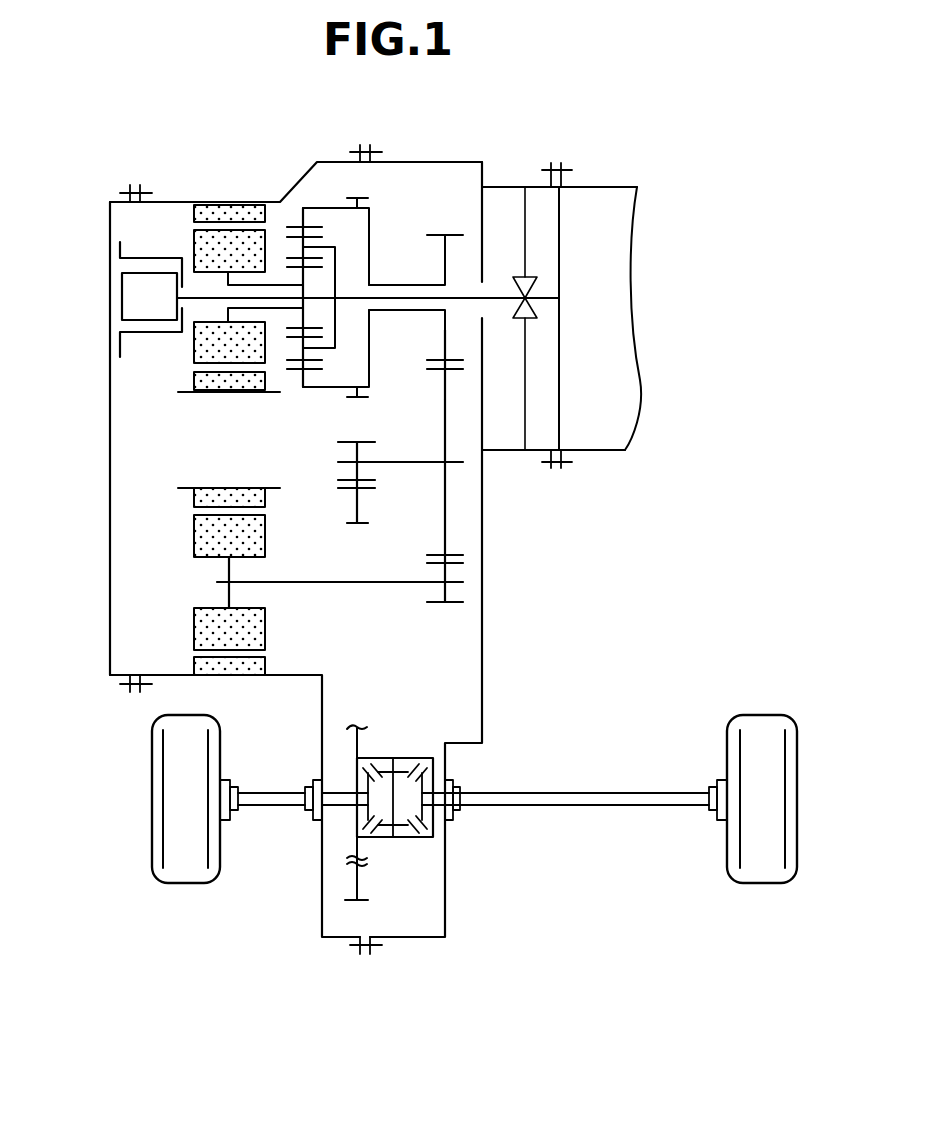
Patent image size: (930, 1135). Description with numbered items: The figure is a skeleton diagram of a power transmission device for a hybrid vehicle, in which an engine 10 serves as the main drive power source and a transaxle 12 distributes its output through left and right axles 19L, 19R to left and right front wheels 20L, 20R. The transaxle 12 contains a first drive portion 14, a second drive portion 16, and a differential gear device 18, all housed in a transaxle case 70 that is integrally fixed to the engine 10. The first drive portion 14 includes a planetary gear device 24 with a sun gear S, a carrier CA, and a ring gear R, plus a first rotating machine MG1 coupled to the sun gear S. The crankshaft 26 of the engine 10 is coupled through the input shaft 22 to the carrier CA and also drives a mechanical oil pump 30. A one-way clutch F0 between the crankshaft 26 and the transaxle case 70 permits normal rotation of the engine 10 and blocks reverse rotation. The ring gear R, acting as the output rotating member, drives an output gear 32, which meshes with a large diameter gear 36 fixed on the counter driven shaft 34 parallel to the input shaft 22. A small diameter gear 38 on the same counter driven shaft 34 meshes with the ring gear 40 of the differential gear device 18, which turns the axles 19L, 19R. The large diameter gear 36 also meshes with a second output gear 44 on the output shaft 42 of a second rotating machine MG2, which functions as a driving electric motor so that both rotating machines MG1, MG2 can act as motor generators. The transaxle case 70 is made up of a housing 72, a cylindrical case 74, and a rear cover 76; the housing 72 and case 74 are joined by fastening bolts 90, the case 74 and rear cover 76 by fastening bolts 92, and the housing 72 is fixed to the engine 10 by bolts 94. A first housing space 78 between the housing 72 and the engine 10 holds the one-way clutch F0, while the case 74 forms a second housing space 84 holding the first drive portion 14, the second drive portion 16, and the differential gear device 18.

The engine 10 is at (623, 390).
The transaxle 12 is at (535, 507).
The first drive portion 14 is at (390, 214).
The second drive portion 16 is at (383, 608).
The differential gear device 18 is at (465, 840).
The left axle 19L is at (270, 795).
The right axle 19R is at (597, 795).
The left front wheel 20L is at (187, 870).
The right front wheel 20R is at (763, 872).
The input shaft 22 is at (489, 302).
The planetary gear device 24 is at (308, 190).
The crankshaft 26 is at (550, 297).
The mechanical oil pump 30 is at (130, 300).
The output gear 32 is at (452, 360).
The counter driven shaft 34 is at (400, 465).
The large diameter gear 36 is at (437, 372).
The small diameter gear 38 is at (365, 447).
The ring gear of the differential gear device 40 is at (347, 494).
The output shaft 42 is at (308, 585).
The second output gear 44 is at (465, 577).
The transaxle case 70 is at (478, 151).
The housing 72 is at (437, 162).
The case 74 is at (178, 202).
The rear cover 76 is at (110, 563).
The first housing space 78 is at (485, 438).
The second housing space 84 is at (440, 650).
The fastening bolts 90 is at (378, 152).
The fastening bolts 92 is at (130, 193).
The bolts 94 is at (566, 169).
The first rotating machine MG1 is at (172, 364).
The second rotating machine MG2 is at (178, 534).
The carrier CA is at (325, 247).
The sun gear S is at (308, 328).
The ring gear R is at (290, 372).
The one-way clutch F0 is at (514, 283).